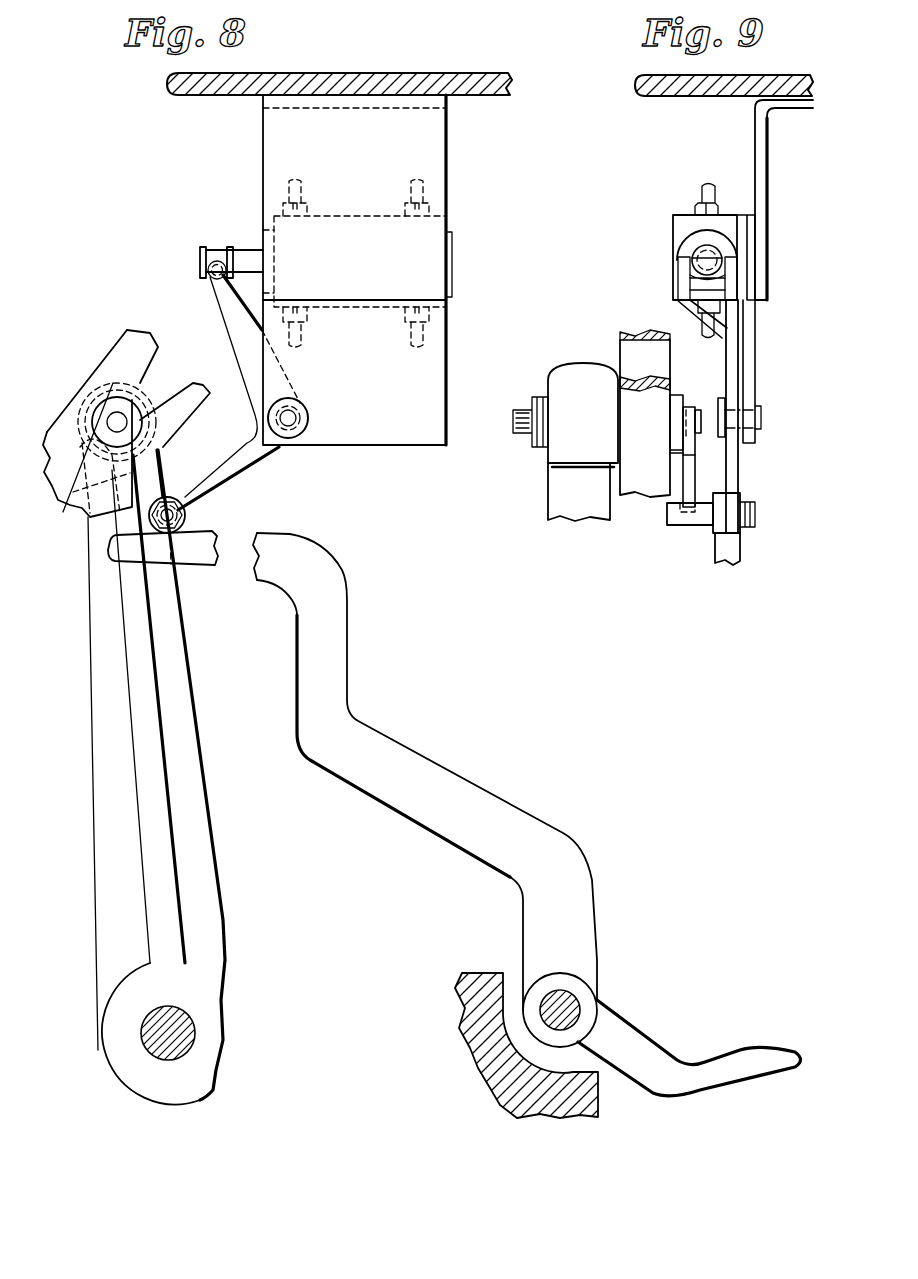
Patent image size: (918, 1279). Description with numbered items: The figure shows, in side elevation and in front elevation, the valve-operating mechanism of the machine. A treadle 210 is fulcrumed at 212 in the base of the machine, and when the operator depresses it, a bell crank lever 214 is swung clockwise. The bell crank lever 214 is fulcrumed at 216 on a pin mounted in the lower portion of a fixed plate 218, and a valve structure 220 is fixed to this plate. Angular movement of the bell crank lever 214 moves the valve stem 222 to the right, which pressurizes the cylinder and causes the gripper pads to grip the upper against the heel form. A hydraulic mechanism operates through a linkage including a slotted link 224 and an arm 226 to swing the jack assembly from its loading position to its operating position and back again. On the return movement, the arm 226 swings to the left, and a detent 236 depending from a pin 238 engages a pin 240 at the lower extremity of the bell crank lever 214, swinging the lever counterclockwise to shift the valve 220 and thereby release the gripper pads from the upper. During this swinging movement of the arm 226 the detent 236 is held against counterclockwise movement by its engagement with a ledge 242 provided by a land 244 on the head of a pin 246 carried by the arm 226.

In FIG. 8, the treadle 210 is at (565, 840).
In FIG. 9, the treadle 210 is at (728, 558).
In FIG. 8, the fulcrum 212 is at (567, 996).
In FIG. 8, the bell crank lever 214 is at (222, 293).
In FIG. 9, the bell crank lever 214 is at (738, 476).
In FIG. 8, the fulcrum pin 216 is at (297, 416).
In FIG. 9, the fulcrum pin 216 is at (752, 406).
In FIG. 8, the fixed plate 218 is at (438, 140).
In FIG. 9, the fixed plate 218 is at (762, 147).
In FIG. 8, the valve structure 220 is at (347, 214).
In FIG. 9, the valve structure 220 is at (676, 222).
In FIG. 8, the valve stem 222 is at (247, 253).
In FIG. 9, the valve stem 222 is at (700, 252).
In FIG. 8, the slotted link 224 is at (140, 343).
In FIG. 9, the slotted link 224 is at (645, 495).
In FIG. 8, the arm 226 is at (195, 733).
In FIG. 9, the arm 226 is at (575, 512).
In FIG. 8, the detent 236 is at (90, 490).
In FIG. 9, the detent 236 is at (685, 453).
In FIG. 8, the pin 238 is at (112, 418).
In FIG. 9, the pin 238 is at (700, 428).
In FIG. 8, the pin 240 is at (176, 515).
In FIG. 9, the pin 240 is at (695, 518).
In FIG. 8, the ledge 242 is at (123, 398).
In FIG. 9, the ledge 242 is at (688, 407).
In FIG. 8, the land 244 is at (137, 422).
In FIG. 8, the pin 246 is at (103, 403).
In FIG. 9, the pin 246 is at (673, 410).